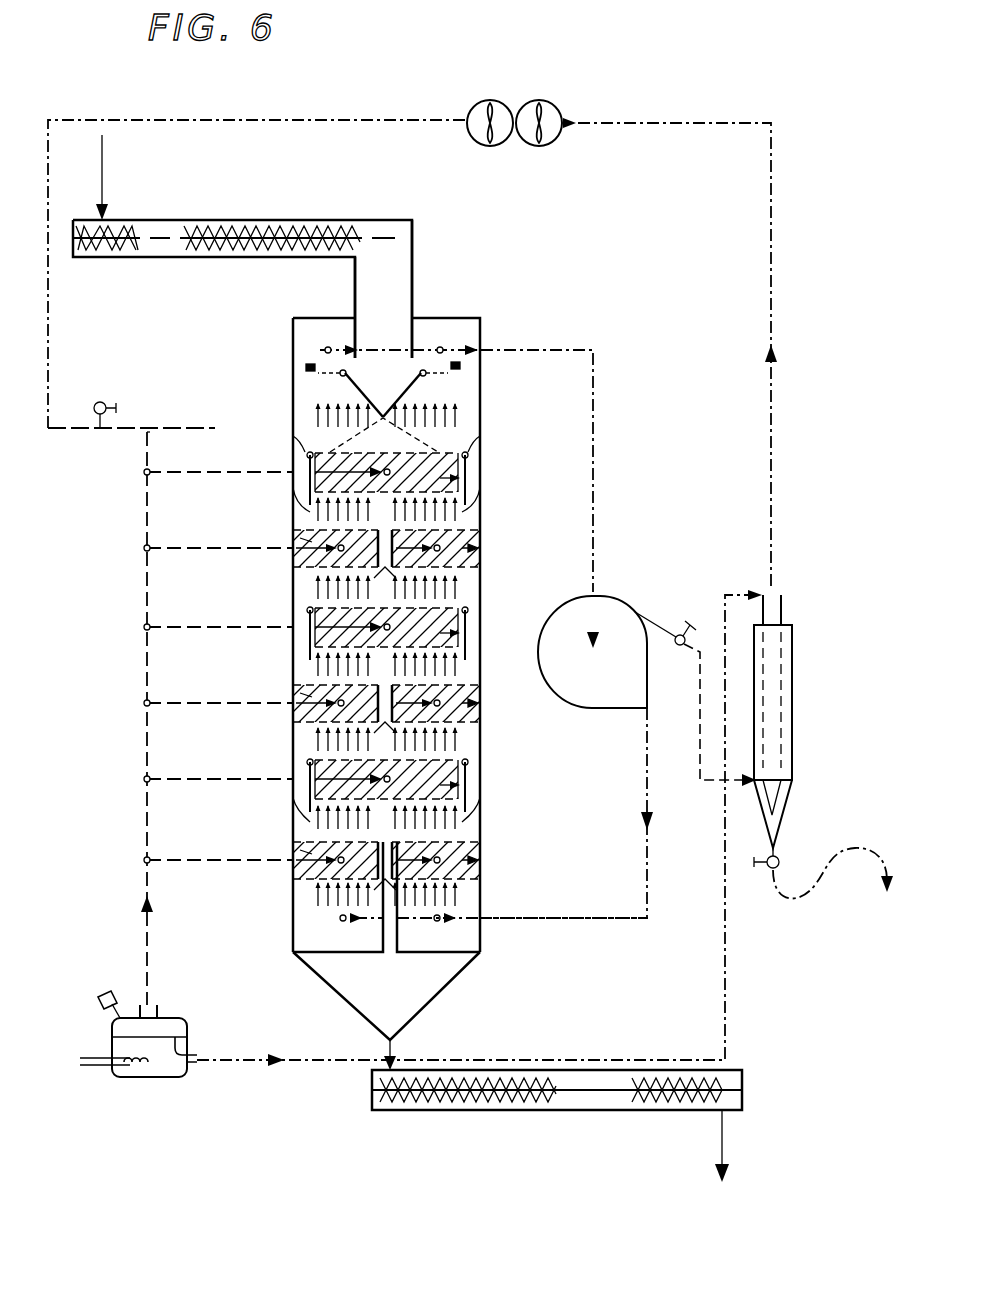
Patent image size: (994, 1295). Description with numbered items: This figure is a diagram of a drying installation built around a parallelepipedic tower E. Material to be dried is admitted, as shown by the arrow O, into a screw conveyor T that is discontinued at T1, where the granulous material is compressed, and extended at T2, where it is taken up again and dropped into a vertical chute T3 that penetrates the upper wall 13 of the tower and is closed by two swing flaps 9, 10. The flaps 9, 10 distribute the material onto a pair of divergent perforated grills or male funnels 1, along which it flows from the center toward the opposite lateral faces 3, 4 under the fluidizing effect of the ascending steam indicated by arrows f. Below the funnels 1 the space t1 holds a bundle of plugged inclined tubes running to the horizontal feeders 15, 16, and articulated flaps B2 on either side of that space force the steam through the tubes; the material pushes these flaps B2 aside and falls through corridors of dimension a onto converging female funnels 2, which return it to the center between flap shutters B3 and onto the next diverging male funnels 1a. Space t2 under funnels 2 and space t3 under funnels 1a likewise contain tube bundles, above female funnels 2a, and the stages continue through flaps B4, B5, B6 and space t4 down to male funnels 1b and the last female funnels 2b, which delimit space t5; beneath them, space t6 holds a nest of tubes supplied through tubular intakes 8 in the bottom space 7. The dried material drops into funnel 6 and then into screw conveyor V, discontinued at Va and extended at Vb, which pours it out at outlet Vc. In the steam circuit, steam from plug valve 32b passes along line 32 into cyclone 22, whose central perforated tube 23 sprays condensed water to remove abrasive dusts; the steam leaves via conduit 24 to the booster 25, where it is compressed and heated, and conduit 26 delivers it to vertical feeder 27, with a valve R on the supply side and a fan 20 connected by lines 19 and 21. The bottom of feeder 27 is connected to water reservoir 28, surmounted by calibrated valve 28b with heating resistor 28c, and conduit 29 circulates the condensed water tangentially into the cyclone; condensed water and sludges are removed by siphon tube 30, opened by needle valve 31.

The grills or male funnels 1 is at (300, 445).
The perforated male funnels 1a is at (310, 600).
The male funnels 1b is at (308, 757).
The perforated plates or female funnels 2 is at (297, 516).
The female funnels 2a is at (384, 412).
The female funnels 2b is at (305, 820).
The lateral face 3 is at (481, 348).
The lateral face 4 is at (293, 334).
The funnel 6 is at (440, 985).
The space 7 is at (480, 945).
The tubular intakes 8 is at (340, 922).
The swing flap 9 is at (352, 398).
The swing flap 10 is at (412, 385).
The upper wall 13 is at (480, 316).
The horizontal feeder 15 is at (218, 612).
The horizontal feeder 16 is at (218, 691).
The gas outlet line 19 is at (590, 350).
The fan 20 is at (606, 684).
The recycle gas line 21 is at (647, 870).
The cyclone 22 is at (792, 635).
The perforated tube 23 is at (785, 715).
The conduit 24 is at (668, 122).
The booster 25 is at (544, 96).
The conduit 26 is at (48, 288).
The vertical feeder 27 is at (147, 508).
The water reservoir 28 is at (170, 1080).
The calibrated valve 28b is at (102, 995).
The heating resistor 28c is at (136, 1070).
The conduit 29 is at (256, 1065).
The siphon tube 30 is at (800, 898).
The needle valve 31 is at (766, 875).
The bypass line 32 is at (700, 764).
The plug valve 32b is at (683, 648).
The screw conveyor T is at (82, 218).
The admitting device O is at (122, 205).
The discontinued portion of screw conveyor T1 is at (170, 230).
The extended portion of screw conveyor T2 is at (288, 228).
The vertical chute T3 is at (413, 265).
The regulating valve R is at (100, 402).
The articulated flaps B2 is at (305, 476).
The flap shutters B3 is at (300, 538).
The tray B4 is at (305, 610).
The tray B5 is at (300, 715).
The tray B6 is at (305, 766).
The tower E is at (485, 890).
The arrows of ascending steam f is at (305, 415).
The corridor dimension a is at (305, 455).
The space t1 is at (470, 495).
The space t2 is at (300, 560).
The space t3 is at (470, 647).
The tray gap t4 is at (298, 700).
The space t5 is at (470, 797).
The space t6 is at (298, 855).
The screw conveyor V is at (486, 1100).
The discontinued portion of screw conveyor Va is at (590, 1100).
The extended portion of screw conveyor Vb is at (664, 1100).
The outlet Vc is at (724, 1140).